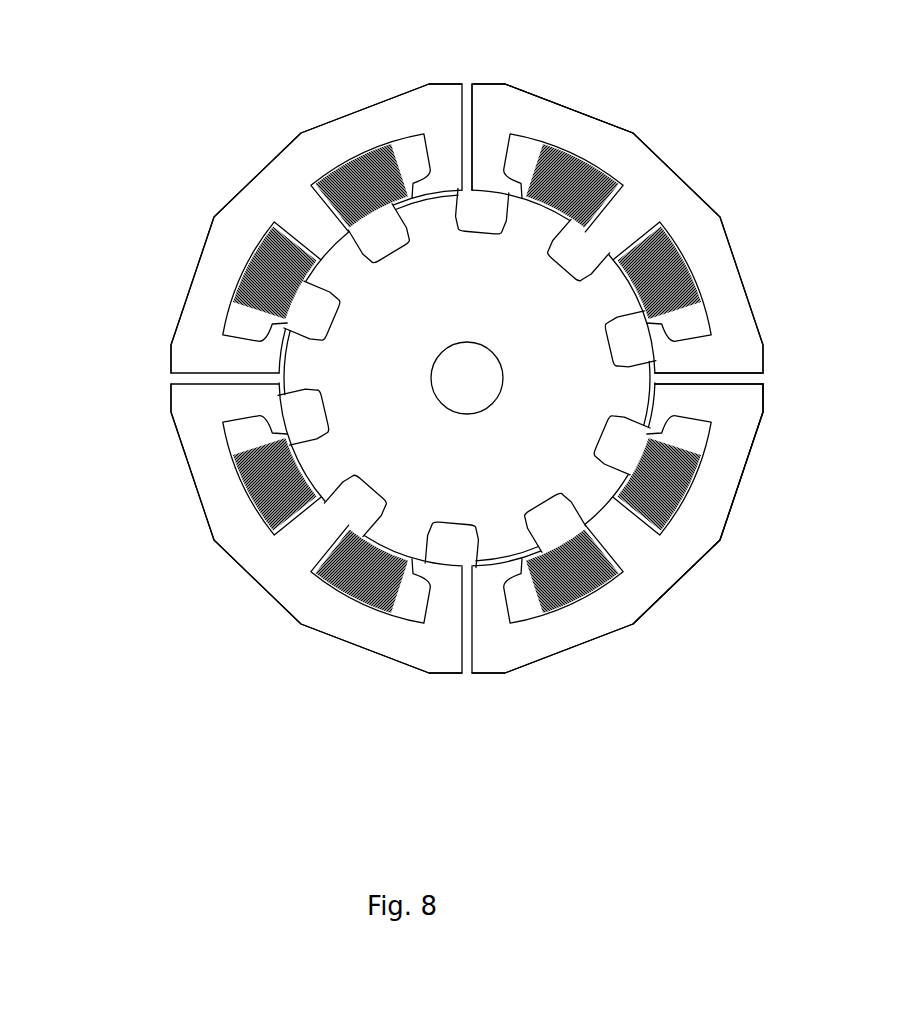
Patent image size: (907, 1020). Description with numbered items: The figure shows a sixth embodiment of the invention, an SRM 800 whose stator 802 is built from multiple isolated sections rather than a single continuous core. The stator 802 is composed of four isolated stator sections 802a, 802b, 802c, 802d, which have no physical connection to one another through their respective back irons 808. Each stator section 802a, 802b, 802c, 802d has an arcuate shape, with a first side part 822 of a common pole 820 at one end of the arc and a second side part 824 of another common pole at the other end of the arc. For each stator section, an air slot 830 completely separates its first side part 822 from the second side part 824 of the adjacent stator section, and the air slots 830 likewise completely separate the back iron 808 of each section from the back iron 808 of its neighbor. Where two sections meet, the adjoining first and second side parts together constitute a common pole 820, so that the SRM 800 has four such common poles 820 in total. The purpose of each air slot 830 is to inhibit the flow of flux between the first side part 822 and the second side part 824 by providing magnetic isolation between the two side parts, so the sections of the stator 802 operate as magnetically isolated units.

The SRM 800 is at (506, 421).
The stator 802 is at (471, 369).
The stator section 802a is at (683, 179).
The stator section 802b is at (678, 582).
The stator section 802c is at (260, 587).
The stator section 802d is at (254, 177).
The back iron 808 is at (502, 104).
The common pole 820 is at (775, 291).
The first side part 822 is at (667, 347).
The second side part 824 is at (497, 176).
The air slot 830 is at (747, 375).